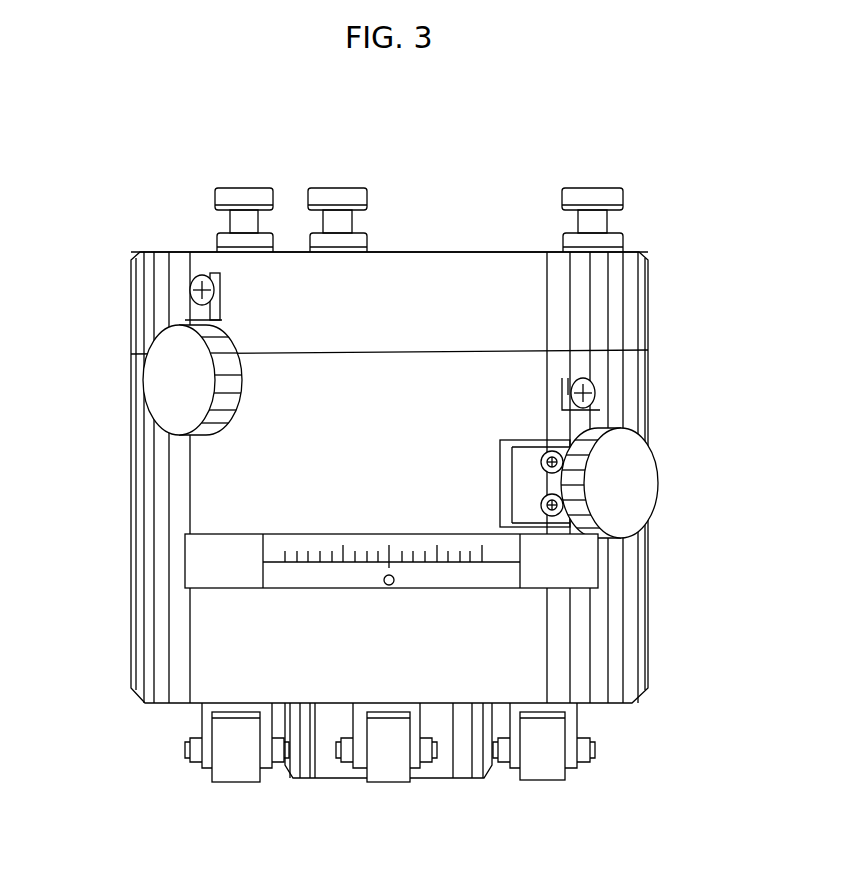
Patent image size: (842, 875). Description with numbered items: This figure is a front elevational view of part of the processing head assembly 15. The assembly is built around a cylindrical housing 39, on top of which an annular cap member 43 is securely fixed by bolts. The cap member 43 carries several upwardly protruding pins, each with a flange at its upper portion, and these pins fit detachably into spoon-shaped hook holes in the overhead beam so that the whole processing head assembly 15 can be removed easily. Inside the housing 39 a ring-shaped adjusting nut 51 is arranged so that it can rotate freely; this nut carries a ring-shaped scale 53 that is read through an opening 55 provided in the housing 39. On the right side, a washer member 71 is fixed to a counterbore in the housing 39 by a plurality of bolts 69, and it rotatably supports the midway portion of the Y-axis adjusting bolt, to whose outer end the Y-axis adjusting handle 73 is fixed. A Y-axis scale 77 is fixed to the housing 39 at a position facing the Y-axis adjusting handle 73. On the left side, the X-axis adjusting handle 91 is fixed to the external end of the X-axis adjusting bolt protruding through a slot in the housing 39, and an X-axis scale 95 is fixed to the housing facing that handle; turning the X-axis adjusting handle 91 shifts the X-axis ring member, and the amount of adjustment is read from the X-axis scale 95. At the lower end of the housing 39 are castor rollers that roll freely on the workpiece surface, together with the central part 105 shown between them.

The processing head assembly 15 is at (123, 667).
The cylindrical housing 39 is at (148, 540).
The annular cap member 43 is at (460, 262).
The adjusting nut 51 is at (308, 590).
The scale 53 is at (391, 564).
The opening 55 is at (245, 590).
The bolts 69 is at (548, 462).
The washer member 71 is at (515, 470).
The Y-axis adjusting handle 73 is at (640, 505).
The Y-axis scale 77 is at (575, 418).
The X-axis adjusting handle 91 is at (235, 407).
The X-axis scale 95 is at (222, 320).
The center roller frame 105 is at (320, 770).